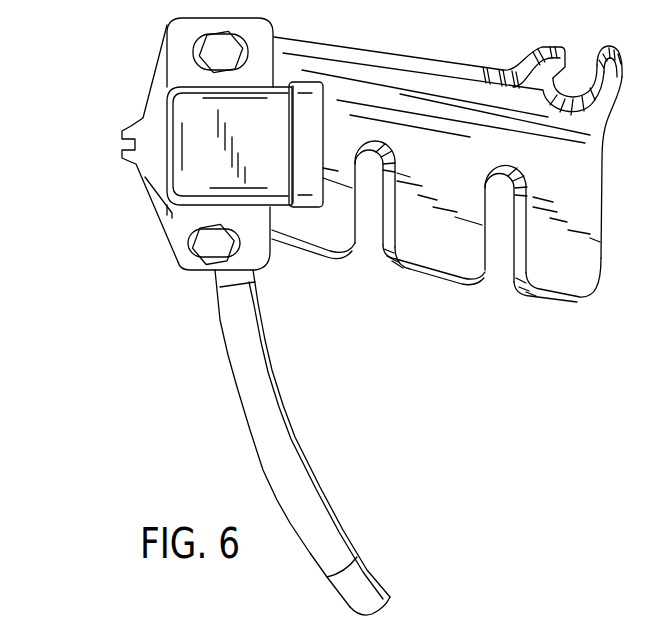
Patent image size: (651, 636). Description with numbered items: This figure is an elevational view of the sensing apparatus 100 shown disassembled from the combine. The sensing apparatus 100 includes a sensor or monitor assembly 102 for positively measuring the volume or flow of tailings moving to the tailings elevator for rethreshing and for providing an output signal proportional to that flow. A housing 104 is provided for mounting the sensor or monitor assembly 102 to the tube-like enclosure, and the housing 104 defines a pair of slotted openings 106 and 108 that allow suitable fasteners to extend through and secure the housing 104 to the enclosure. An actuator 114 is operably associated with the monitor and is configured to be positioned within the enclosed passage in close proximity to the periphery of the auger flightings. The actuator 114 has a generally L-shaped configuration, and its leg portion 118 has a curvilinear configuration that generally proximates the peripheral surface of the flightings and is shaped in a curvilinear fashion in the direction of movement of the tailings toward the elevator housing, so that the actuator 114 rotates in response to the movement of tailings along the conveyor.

The sensing apparatus 100 is at (104, 196).
The sensor or monitor assembly 102 is at (257, 231).
The housing 104 is at (446, 258).
The slotted opening 106 is at (383, 230).
The slotted opening 108 is at (517, 258).
The actuator 114 is at (272, 410).
The leg portion 118 is at (367, 583).